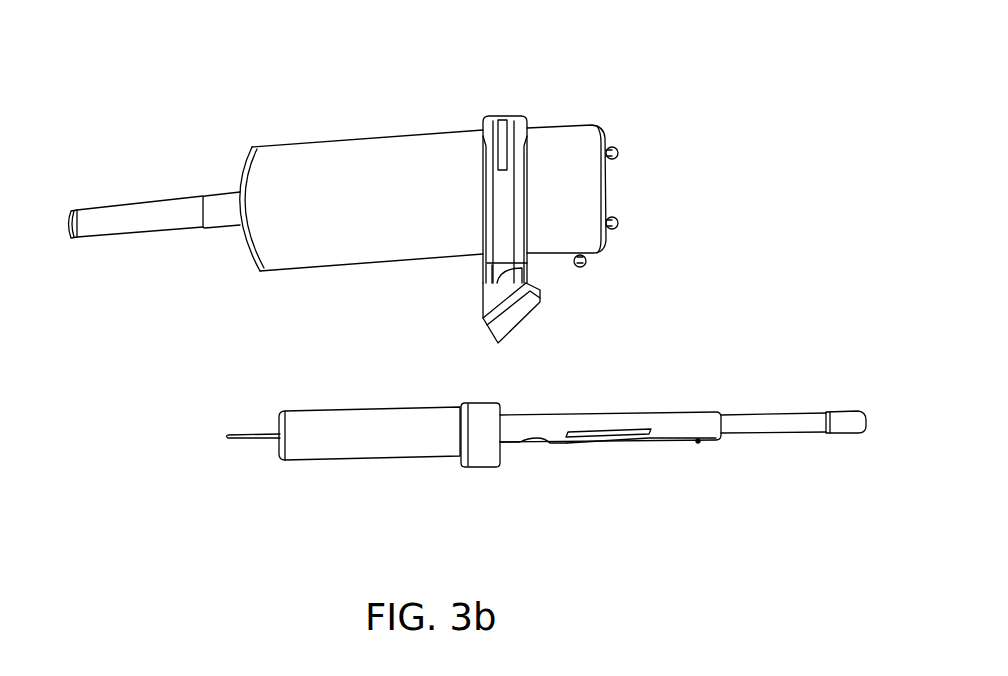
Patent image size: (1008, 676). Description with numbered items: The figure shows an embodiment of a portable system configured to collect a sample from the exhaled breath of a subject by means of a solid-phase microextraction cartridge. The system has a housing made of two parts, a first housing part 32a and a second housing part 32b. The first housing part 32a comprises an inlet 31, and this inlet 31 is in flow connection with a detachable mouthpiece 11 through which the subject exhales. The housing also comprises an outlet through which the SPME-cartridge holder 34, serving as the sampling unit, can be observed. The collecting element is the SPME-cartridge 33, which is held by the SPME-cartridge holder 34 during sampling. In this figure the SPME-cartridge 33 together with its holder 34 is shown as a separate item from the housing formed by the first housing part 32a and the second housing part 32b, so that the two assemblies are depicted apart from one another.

The detachable mouthpiece 11 is at (111, 203).
The inlet 31 is at (211, 191).
The first housing part 32a is at (361, 150).
The second housing part 32b is at (570, 131).
The SPME-cartridge 33 is at (240, 447).
The SPME-cartridge holder 34 is at (620, 449).